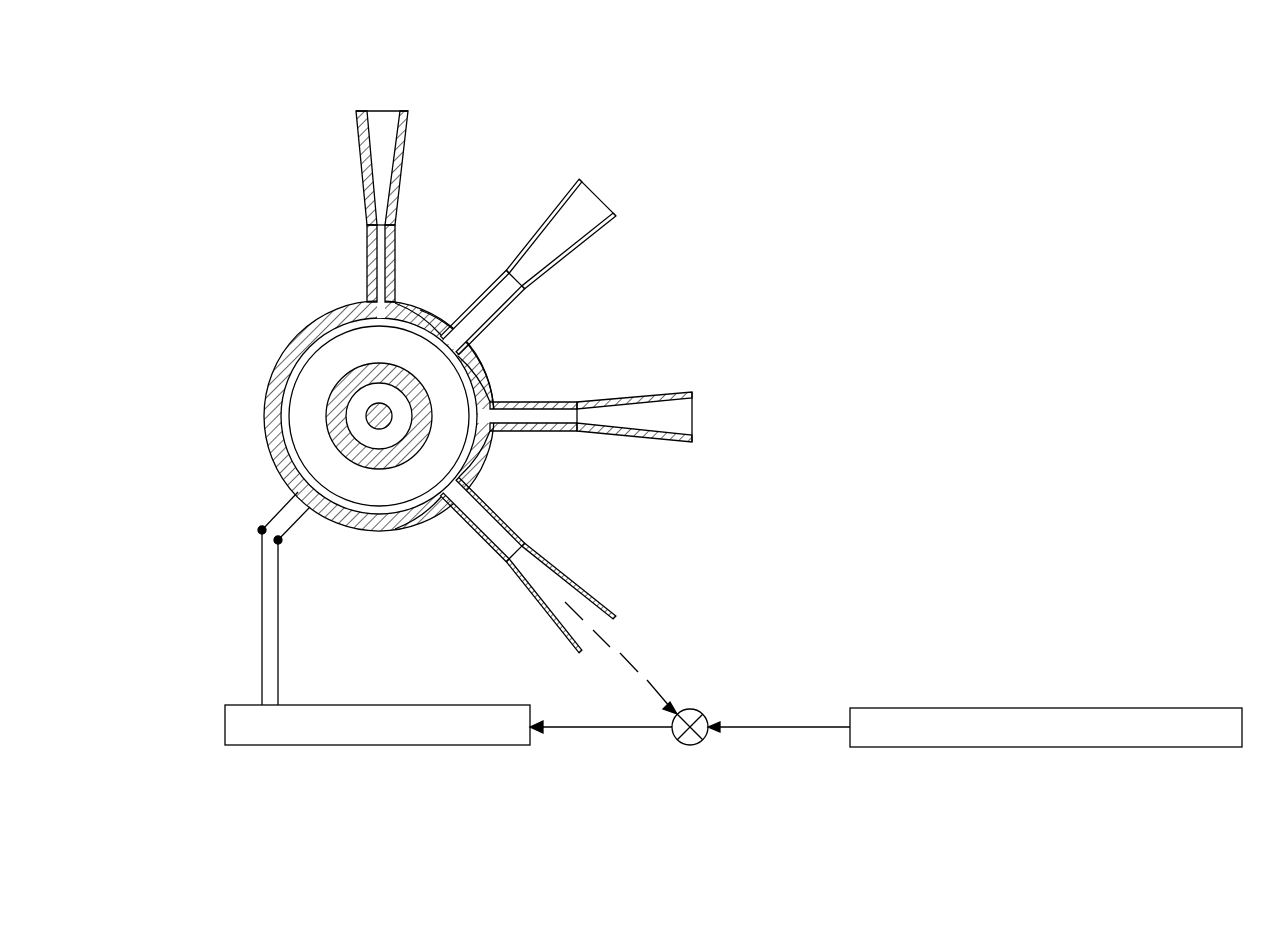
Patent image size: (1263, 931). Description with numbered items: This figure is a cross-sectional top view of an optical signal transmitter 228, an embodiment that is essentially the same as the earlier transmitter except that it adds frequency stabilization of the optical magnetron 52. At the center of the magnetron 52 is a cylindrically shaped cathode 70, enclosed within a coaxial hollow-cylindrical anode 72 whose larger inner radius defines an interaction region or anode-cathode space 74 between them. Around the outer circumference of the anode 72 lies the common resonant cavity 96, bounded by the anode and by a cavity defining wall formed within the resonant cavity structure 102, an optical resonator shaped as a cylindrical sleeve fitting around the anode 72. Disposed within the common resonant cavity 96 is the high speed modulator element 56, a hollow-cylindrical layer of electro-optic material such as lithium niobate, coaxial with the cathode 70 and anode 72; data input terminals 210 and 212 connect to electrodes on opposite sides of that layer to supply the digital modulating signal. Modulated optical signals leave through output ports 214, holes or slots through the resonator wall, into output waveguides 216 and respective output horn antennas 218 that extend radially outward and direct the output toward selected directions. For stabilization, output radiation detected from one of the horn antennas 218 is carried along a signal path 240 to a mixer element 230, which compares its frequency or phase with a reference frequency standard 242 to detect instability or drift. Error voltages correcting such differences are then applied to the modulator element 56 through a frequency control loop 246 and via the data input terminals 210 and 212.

The optical signal transmitter 228 is at (240, 143).
The magnetron 52 is at (306, 303).
The resonant cavity structure 102 is at (287, 349).
The common resonant cavity 96 is at (304, 381).
The anode-cathode space 74 is at (357, 415).
The anode 72 is at (348, 441).
The cathode 70 is at (370, 428).
The modulator element 56 is at (481, 363).
The output ports 214 is at (400, 305).
The output waveguides 216 is at (367, 268).
The output antennas 218 is at (363, 178).
The data input terminal 210 is at (260, 530).
The data input terminal 212 is at (295, 525).
The output signal path 240 is at (622, 658).
The mixer element 230 is at (703, 712).
The reference frequency standard 242 is at (960, 748).
The frequency control loop 246 is at (375, 745).